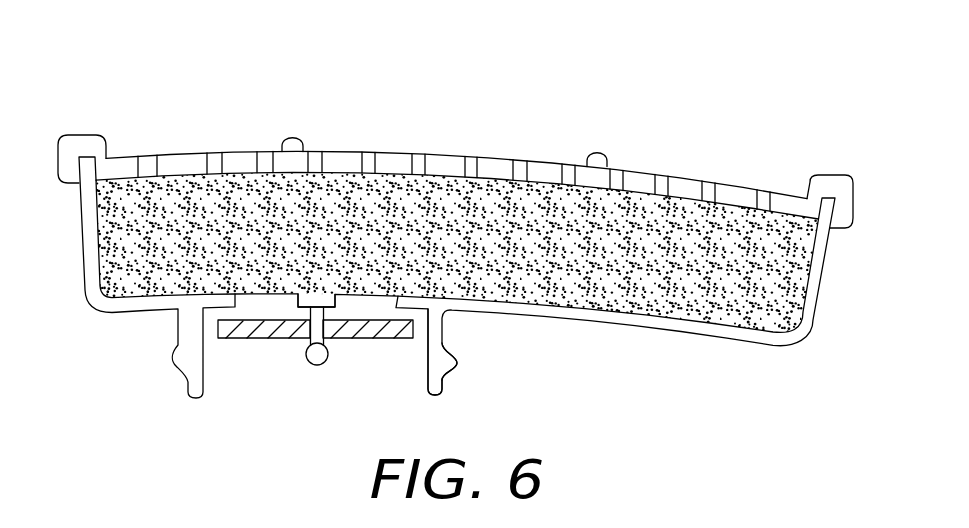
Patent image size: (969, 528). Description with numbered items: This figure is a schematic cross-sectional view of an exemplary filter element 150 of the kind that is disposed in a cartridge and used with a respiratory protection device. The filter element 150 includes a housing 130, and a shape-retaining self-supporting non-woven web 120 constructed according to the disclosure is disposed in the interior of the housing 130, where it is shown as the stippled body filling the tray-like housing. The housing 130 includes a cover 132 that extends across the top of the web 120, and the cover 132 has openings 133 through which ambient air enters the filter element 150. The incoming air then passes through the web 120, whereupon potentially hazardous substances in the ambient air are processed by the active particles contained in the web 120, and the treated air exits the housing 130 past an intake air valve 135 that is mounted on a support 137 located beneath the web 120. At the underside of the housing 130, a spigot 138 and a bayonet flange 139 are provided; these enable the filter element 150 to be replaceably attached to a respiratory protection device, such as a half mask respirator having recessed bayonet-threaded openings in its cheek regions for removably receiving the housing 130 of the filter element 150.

The filter element 150 is at (640, 97).
The housing 130 is at (812, 277).
The shape-retaining self-supporting non-woven web 120 is at (107, 210).
The cover 132 is at (137, 167).
The openings 133 is at (417, 162).
The intake air valve 135 is at (260, 339).
The support 137 is at (325, 359).
The spigot 138 is at (439, 388).
The bayonet flange 139 is at (457, 362).